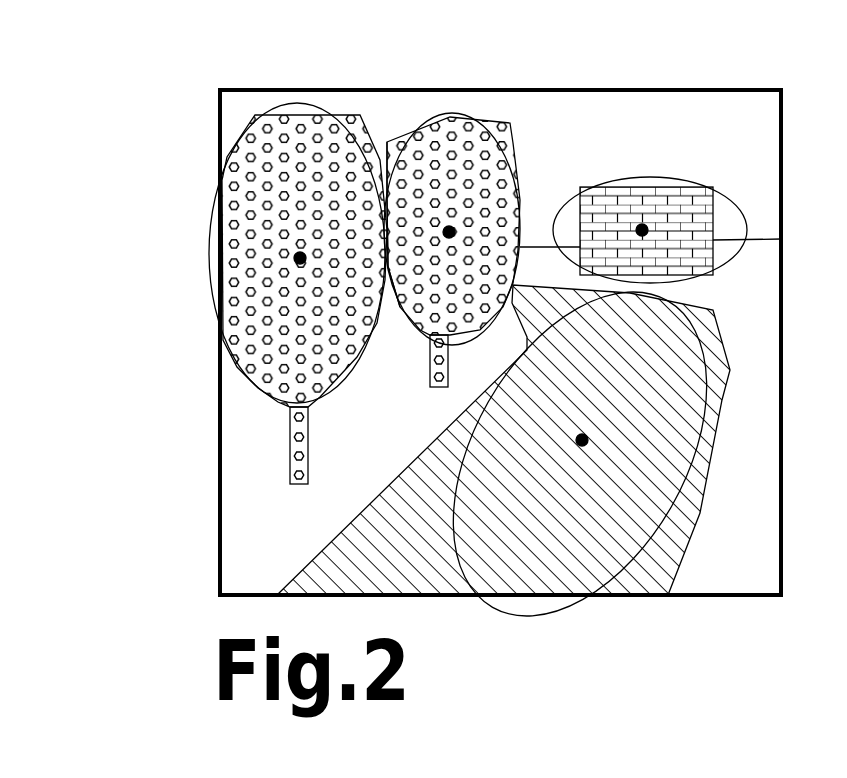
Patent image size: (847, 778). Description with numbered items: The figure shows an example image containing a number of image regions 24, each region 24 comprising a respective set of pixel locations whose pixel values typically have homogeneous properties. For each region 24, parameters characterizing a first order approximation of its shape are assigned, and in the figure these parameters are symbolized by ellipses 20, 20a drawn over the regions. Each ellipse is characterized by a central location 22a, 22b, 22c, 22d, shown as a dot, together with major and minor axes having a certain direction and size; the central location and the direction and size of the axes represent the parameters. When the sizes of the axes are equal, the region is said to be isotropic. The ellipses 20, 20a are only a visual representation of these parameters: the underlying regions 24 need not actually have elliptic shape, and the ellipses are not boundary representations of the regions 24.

The ellipse 20 is at (293, 108).
The ellipse 20a is at (387, 142).
The central location 22a is at (449, 230).
The central location 22b is at (300, 258).
The central location 22c is at (642, 228).
The central location 22d is at (582, 440).
The image region 24 is at (267, 177).